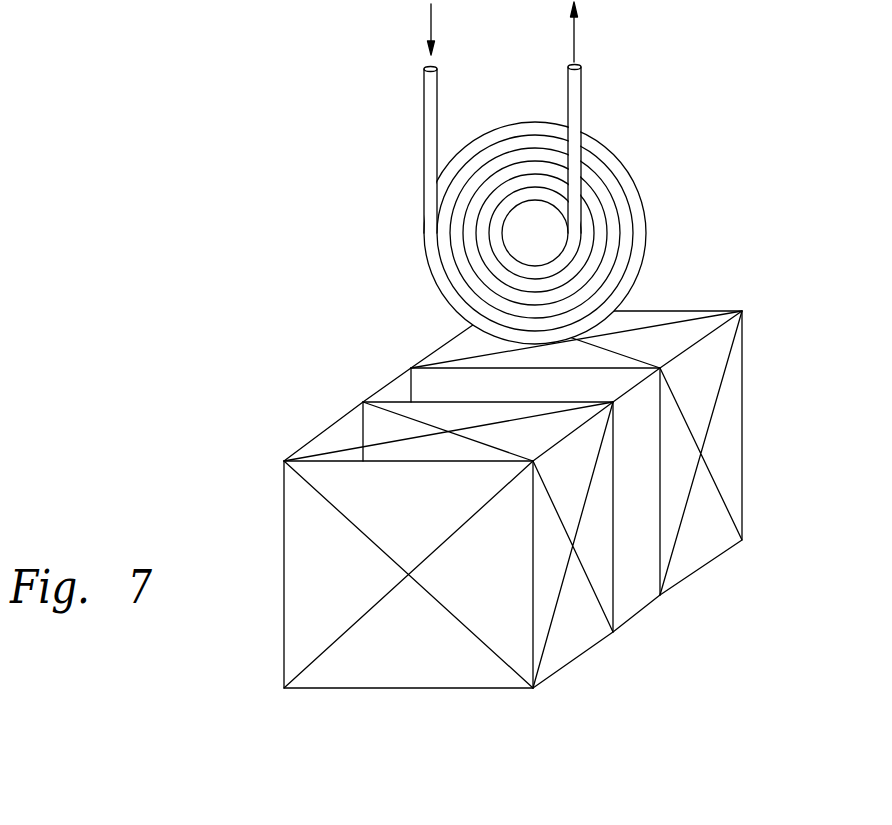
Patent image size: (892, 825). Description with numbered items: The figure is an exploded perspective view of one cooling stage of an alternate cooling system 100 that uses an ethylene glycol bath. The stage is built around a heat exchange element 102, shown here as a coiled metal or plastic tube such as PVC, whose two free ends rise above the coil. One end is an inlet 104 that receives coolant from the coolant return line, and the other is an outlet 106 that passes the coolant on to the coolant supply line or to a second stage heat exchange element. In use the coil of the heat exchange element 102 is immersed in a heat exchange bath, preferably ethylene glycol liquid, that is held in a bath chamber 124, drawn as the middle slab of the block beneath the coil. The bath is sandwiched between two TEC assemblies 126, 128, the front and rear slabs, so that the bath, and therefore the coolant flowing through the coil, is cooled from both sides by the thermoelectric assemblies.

The cooling system 100 is at (330, 283).
The heat exchange element 102 is at (629, 174).
The inlet 104 is at (428, 66).
The outlet 106 is at (580, 67).
The bath chamber 124 is at (635, 600).
The TEC assembly 126 is at (577, 647).
The TEC assembly 128 is at (731, 432).